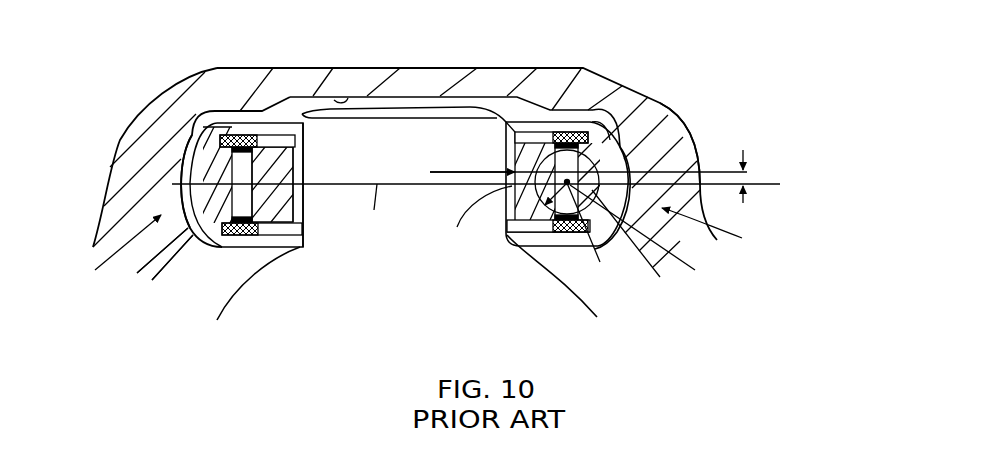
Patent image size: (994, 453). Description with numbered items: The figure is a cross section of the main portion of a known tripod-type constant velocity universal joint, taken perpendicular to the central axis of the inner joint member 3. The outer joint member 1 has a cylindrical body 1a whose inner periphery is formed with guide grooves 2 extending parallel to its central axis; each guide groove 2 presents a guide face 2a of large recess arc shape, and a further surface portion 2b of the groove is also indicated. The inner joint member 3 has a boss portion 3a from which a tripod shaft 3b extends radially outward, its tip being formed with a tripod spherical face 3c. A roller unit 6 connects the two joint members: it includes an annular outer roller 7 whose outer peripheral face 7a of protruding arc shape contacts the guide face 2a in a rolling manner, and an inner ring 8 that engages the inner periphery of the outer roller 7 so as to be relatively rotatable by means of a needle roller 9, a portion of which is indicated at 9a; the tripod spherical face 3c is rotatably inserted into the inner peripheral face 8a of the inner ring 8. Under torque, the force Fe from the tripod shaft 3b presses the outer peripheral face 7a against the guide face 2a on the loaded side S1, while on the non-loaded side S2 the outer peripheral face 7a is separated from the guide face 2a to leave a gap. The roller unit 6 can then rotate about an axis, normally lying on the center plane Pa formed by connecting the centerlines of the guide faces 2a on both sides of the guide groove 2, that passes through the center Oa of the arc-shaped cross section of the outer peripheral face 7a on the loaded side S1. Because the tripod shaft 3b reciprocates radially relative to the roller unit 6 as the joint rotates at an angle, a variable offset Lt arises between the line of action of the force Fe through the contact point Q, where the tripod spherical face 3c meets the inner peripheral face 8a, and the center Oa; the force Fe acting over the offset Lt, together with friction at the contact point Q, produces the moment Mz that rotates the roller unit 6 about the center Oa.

The outer joint member 1 is at (664, 101).
The cylindrical body 1a is at (680, 133).
The guide groove 2 is at (372, 96).
The guide face 2a is at (187, 248).
The cup wall 2b is at (282, 148).
The inner joint member 3 is at (595, 307).
The boss portion 3a is at (545, 278).
The tripod shaft 3b is at (460, 127).
The tripod spherical face 3c is at (523, 135).
The roller unit 6 is at (596, 106).
The outer roller 7 is at (170, 170).
The outer peripheral face 7a is at (177, 148).
The inner ring 8 is at (245, 170).
The inner peripheral face 8a is at (296, 202).
The needle roller 9 is at (205, 130).
The retainer plate hatched portion 9a is at (242, 135).
The variable offset Lt is at (478, 176).
The force Fe is at (444, 172).
The center plane Pa is at (380, 220).
The contact point Q is at (480, 221).
The center Oa is at (582, 242).
The moment Mz is at (647, 245).
The loaded side S1 is at (720, 232).
The non-loaded side S2 is at (119, 260).